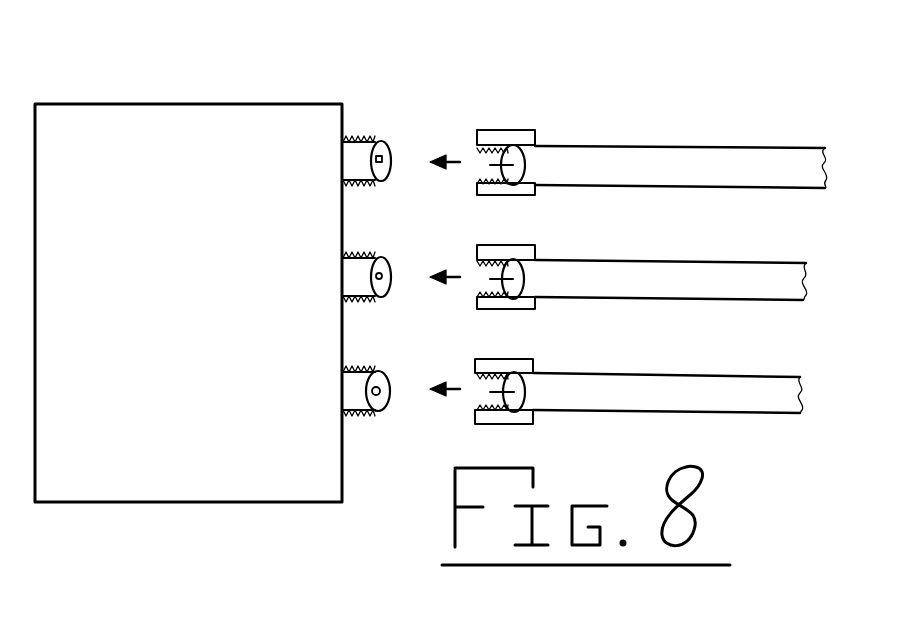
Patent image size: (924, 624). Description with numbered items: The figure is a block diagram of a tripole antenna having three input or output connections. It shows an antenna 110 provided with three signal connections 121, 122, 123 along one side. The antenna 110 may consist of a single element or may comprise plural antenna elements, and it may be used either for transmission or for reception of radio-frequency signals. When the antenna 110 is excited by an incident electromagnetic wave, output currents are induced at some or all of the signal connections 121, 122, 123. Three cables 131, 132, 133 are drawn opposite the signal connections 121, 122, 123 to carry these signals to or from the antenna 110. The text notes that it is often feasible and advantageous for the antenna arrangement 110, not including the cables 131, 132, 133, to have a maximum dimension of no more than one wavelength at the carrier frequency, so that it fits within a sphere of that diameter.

The antenna 110 is at (201, 314).
The signal connection 121 is at (378, 140).
The signal connection 122 is at (373, 255).
The signal connection 123 is at (370, 370).
The cable 131 is at (660, 145).
The cable 132 is at (735, 260).
The cable 133 is at (760, 373).